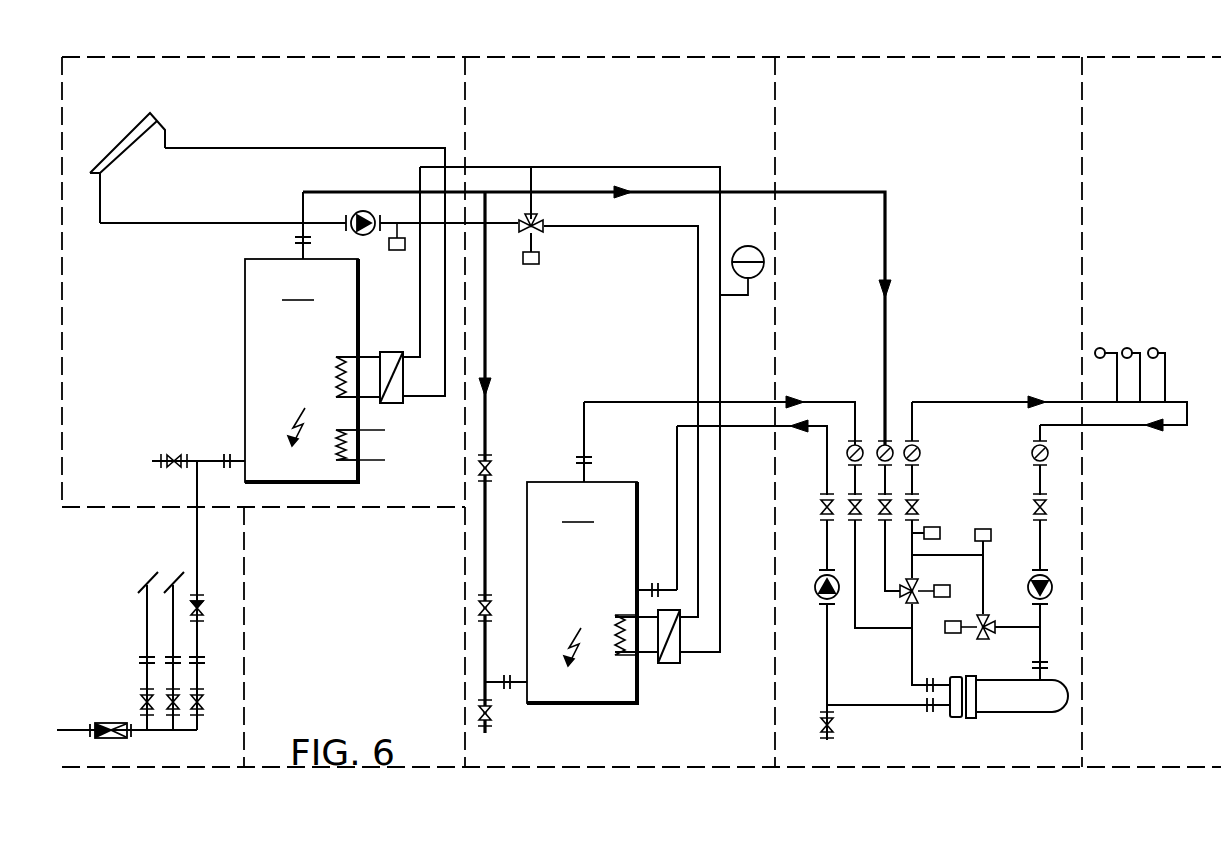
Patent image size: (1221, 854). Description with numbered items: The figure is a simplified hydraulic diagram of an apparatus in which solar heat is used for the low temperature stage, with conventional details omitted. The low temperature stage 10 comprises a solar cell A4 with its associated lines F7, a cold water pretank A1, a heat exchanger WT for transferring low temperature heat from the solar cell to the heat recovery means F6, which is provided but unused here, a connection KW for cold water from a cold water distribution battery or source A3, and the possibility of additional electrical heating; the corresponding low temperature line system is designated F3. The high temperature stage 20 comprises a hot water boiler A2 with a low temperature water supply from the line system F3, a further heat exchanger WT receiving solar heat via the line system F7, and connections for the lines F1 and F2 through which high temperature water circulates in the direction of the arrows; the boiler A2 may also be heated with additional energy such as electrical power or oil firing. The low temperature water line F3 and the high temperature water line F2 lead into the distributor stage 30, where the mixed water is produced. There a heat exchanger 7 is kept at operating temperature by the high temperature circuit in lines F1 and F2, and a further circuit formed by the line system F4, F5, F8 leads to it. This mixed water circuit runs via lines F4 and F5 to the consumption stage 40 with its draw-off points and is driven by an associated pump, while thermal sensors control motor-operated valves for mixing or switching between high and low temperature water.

The low temperature stage 10 is at (239, 91).
The high temperature stage 20 is at (602, 91).
The distributor stage 30 is at (902, 91).
The consumption stage 40 is at (1139, 91).
The cold water pretank A1 is at (301, 370).
The hot water boiler A2 is at (602, 552).
The cold water distribution battery or source A3 is at (109, 711).
The solar cell A4 is at (121, 145).
The heat exchanger WT is at (510, 508).
The cold water connection KW is at (151, 576).
The h.t. water line F1 is at (741, 428).
The h.t. water line F2 is at (741, 400).
The low temperature line system F3 is at (742, 190).
The mixed water line F4 is at (950, 405).
The mixed water line F5 is at (1108, 427).
The heat recovery means F6 is at (379, 442).
The solar cell lines F7 is at (252, 147).
The mixed water circuit line F8 is at (990, 578).
The heat exchanger 7 is at (1038, 700).